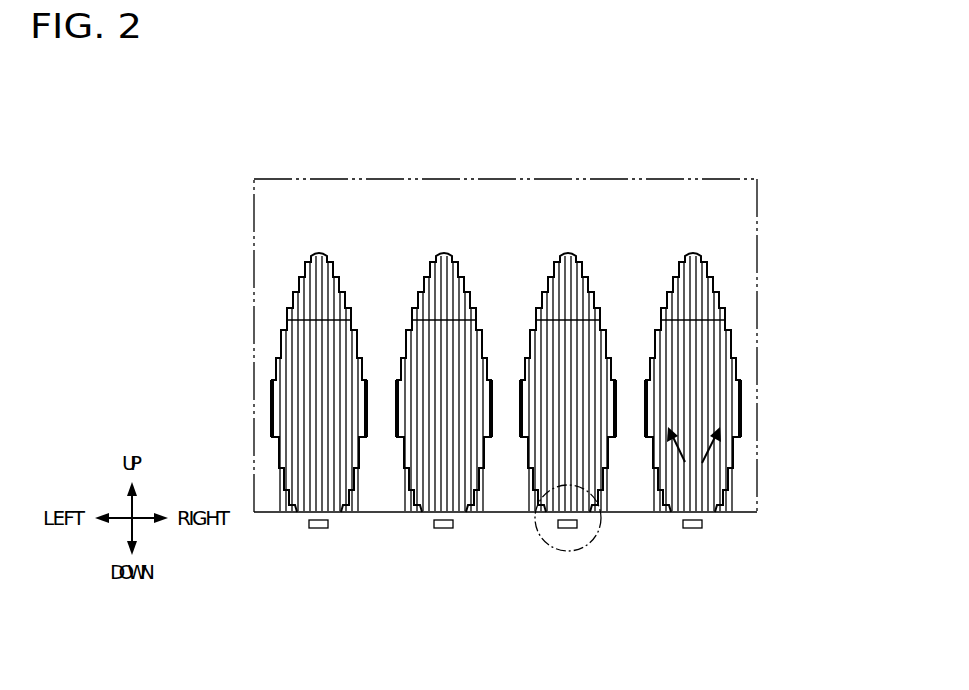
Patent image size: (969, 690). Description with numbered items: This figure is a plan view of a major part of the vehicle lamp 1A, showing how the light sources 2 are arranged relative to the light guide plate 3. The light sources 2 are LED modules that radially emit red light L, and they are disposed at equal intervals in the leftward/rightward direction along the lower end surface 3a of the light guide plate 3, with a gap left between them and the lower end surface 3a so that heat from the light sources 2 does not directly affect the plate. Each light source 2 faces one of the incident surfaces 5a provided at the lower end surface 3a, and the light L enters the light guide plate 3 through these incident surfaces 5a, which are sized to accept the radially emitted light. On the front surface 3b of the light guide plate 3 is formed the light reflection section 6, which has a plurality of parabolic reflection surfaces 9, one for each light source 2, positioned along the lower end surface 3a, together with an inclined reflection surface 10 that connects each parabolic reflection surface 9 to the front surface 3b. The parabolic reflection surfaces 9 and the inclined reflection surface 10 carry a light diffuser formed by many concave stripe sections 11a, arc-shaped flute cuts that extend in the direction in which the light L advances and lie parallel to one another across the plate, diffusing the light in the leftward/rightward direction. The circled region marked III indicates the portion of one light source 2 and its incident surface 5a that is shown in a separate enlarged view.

The vehicle lamp 1A is at (741, 138).
The light source 2 is at (693, 529).
The light guide plate 3 is at (772, 263).
The lower end surface 3a is at (738, 512).
The front surface 3b is at (718, 215).
The incident surface 5a is at (705, 512).
The light reflection section 6 is at (650, 342).
The parabolic reflection surface 9 is at (740, 405).
The inclined reflection surface 10 is at (720, 302).
The concave stripe section 11a is at (710, 382).
The light L is at (702, 463).
The section III indicator III is at (568, 552).